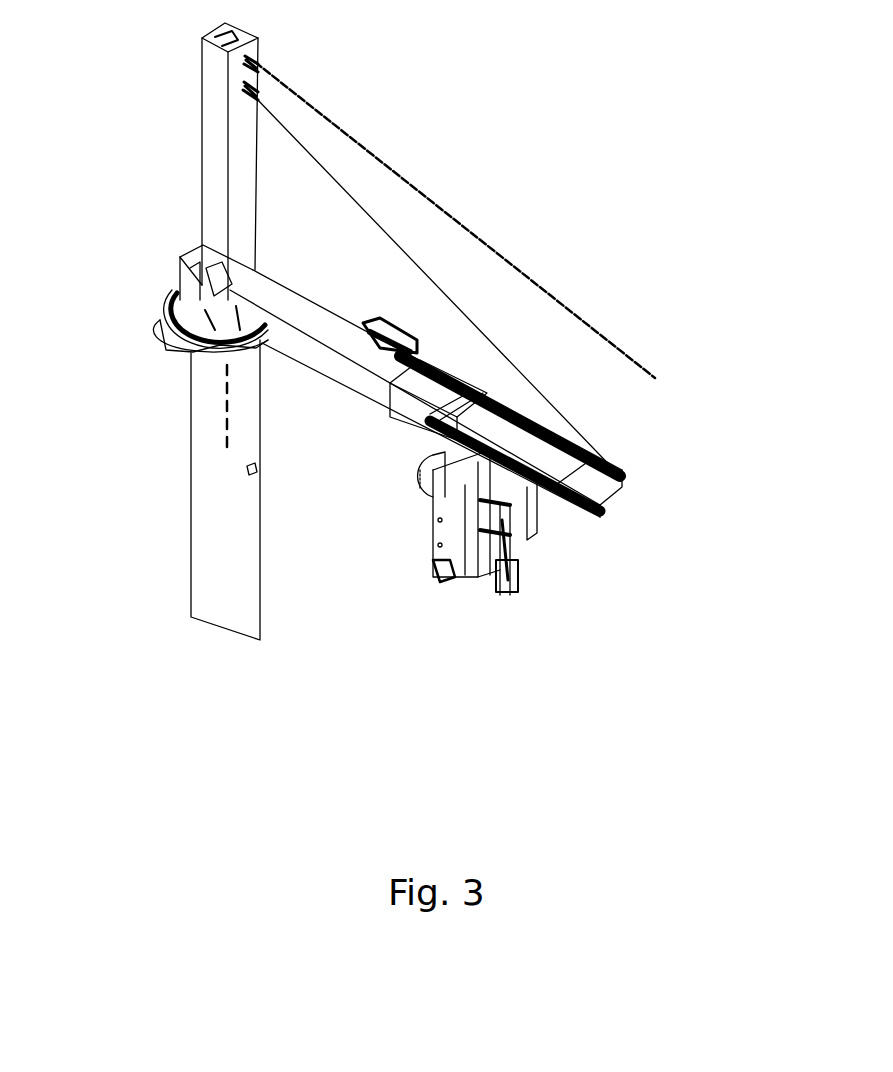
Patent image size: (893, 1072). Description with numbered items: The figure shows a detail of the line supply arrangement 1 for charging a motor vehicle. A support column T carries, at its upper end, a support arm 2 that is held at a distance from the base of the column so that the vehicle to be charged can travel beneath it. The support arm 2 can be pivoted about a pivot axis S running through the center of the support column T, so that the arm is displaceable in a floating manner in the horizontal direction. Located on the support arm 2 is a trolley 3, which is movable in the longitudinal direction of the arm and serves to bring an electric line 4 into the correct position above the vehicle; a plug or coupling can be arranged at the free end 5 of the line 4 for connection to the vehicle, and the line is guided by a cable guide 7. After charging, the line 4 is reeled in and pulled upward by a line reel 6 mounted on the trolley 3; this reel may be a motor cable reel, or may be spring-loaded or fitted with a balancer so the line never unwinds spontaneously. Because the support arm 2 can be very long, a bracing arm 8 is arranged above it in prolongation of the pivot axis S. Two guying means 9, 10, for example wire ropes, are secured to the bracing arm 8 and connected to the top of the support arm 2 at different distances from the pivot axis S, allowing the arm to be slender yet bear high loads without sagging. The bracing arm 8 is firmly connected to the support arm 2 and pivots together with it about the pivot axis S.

The line supply arrangement 1 is at (668, 232).
The support arm 2 is at (607, 492).
The trolley 3 is at (437, 570).
The electric line 4 is at (507, 552).
The connector 5 is at (498, 593).
The line reel 6 is at (425, 462).
The cable guide 7 is at (513, 583).
The bracing arm 8 is at (210, 122).
The guying means 9 is at (493, 247).
The guying means 10 is at (330, 177).
The pivot axis S is at (225, 420).
The support column T is at (195, 553).